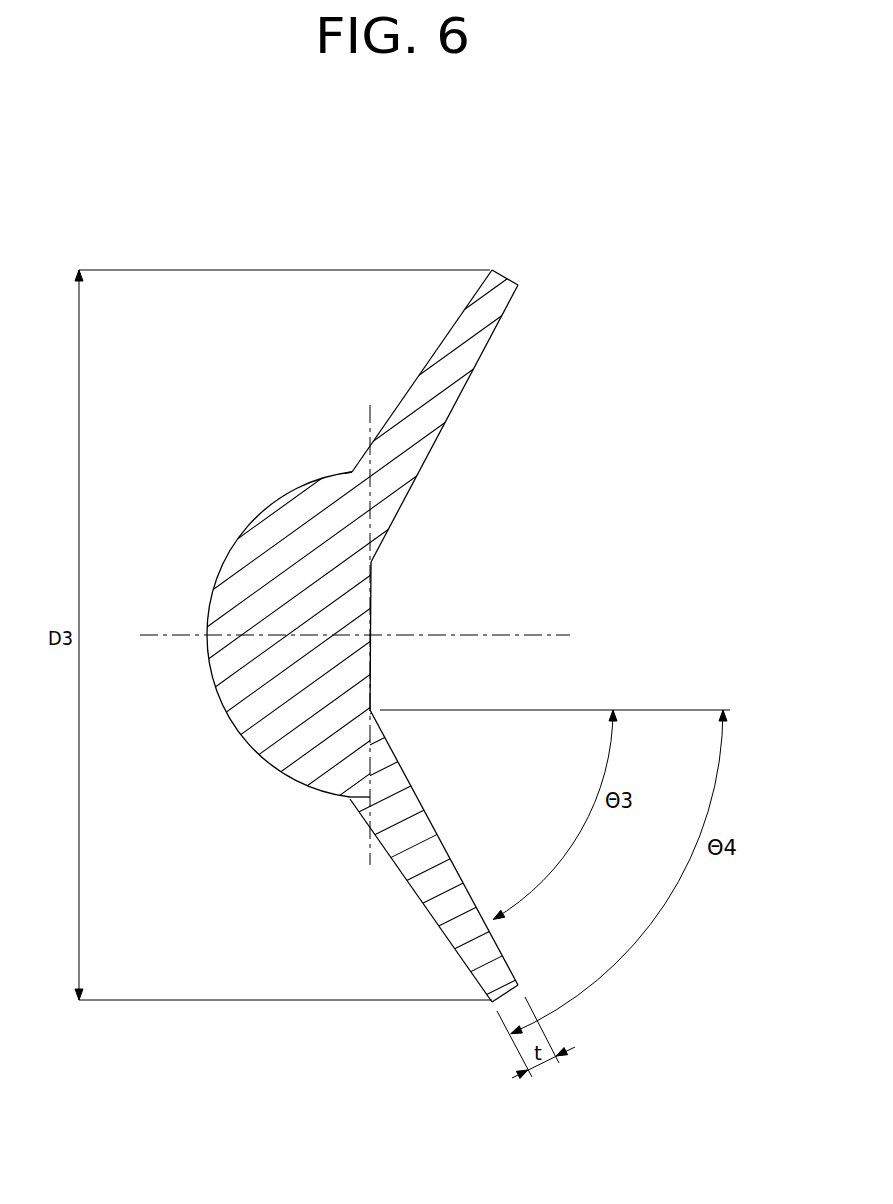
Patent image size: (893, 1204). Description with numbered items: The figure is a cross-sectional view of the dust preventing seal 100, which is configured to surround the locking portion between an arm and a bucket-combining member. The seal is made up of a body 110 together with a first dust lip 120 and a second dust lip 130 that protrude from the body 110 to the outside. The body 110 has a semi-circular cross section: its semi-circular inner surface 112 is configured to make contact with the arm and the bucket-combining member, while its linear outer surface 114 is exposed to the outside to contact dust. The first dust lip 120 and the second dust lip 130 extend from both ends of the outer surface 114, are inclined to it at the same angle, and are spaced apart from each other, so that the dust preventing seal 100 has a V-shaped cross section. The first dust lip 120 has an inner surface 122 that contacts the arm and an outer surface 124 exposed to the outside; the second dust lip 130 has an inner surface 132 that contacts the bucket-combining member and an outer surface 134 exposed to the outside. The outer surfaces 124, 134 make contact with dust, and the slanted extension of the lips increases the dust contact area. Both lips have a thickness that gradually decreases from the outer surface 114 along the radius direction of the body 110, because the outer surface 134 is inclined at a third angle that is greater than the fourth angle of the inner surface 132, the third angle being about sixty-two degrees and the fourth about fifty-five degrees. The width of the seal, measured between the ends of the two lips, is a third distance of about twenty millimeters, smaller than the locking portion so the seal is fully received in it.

The dust preventing seal 100 is at (333, 603).
The body 110 is at (298, 634).
The inner surface 112 is at (213, 587).
The outer surface 114 is at (370, 605).
The first dust lip 120 is at (409, 416).
The inner surface 122 is at (417, 375).
The outer surface 124 is at (443, 420).
The second dust lip 130 is at (410, 856).
The inner surface 132 is at (418, 898).
The outer surface 134 is at (450, 857).